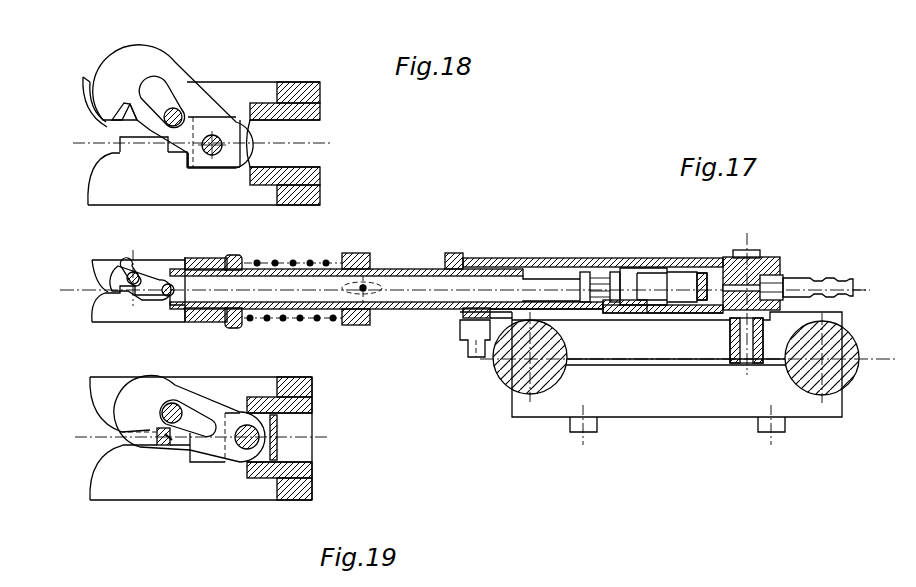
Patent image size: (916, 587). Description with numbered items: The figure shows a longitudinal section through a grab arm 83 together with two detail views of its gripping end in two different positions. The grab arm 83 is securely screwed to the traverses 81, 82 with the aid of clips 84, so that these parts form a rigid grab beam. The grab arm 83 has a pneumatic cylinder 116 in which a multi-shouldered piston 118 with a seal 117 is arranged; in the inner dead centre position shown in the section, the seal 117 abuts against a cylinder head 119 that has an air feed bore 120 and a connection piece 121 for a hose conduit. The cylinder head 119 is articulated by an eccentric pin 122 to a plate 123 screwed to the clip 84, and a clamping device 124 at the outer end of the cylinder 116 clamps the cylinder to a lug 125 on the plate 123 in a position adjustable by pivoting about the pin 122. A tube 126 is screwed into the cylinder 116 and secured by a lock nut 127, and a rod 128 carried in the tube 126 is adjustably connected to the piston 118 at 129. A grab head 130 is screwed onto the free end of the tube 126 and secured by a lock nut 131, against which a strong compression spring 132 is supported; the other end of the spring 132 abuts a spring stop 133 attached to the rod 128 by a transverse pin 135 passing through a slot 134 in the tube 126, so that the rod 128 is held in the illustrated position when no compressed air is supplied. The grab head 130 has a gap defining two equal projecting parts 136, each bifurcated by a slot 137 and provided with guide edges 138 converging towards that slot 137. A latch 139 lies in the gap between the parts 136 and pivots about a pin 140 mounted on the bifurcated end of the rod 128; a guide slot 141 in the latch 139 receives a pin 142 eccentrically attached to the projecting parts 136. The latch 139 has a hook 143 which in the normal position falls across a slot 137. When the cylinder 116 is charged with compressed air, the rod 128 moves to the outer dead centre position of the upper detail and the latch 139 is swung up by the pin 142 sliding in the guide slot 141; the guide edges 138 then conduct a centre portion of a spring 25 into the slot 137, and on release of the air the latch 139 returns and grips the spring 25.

In FIG. 19, the spring 25 is at (175, 441).
In FIG. 17, the traverse 81 is at (847, 348).
In FIG. 17, the traverse 82 is at (507, 376).
In FIG. 17, the grab arm 83 is at (453, 254).
In FIG. 17, the clip 84 is at (686, 408).
In FIG. 17, the pneumatic cylinder 116 is at (668, 262).
In FIG. 17, the seal 117 is at (713, 258).
In FIG. 17, the piston 118 is at (700, 314).
In FIG. 17, the cylinder head 119 is at (775, 272).
In FIG. 17, the air feed bore 120 is at (752, 275).
In FIG. 17, the hose nipple 121 is at (823, 282).
In FIG. 17, the eccentric pin 122 is at (744, 352).
In FIG. 17, the plate 123 is at (632, 348).
In FIG. 17, the clamping device 124 is at (462, 345).
In FIG. 17, the lug 125 is at (483, 357).
In FIG. 18, the tube 126 is at (322, 112).
In FIG. 17, the tube 126 is at (395, 267).
In FIG. 17, the lock nut 127 is at (427, 262).
In FIG. 18, the rod 128 is at (320, 140).
In FIG. 17, the rod 128 is at (535, 280).
In FIG. 17, the adjustable connection 129 is at (616, 275).
In FIG. 18, the grab head 130 is at (290, 83).
In FIG. 17, the grab head 130 is at (208, 250).
In FIG. 17, the lock nut 131 is at (258, 250).
In FIG. 17, the compression spring 132 is at (295, 262).
In FIG. 17, the spring stop 133 is at (355, 253).
In FIG. 17, the slot 134 is at (387, 312).
In FIG. 17, the transverse pin 135 is at (362, 309).
In FIG. 18, the projecting part 136 is at (133, 183).
In FIG. 17, the projecting part 136 is at (100, 314).
In FIG. 19, the projecting part 136 is at (168, 485).
In FIG. 18, the slot 137 is at (122, 140).
In FIG. 19, the slot 137 is at (120, 438).
In FIG. 18, the guide edge 138 is at (87, 87).
In FIG. 18, the latch 139 is at (137, 66).
In FIG. 17, the latch 139 is at (140, 283).
In FIG. 19, the latch 139 is at (155, 390).
In FIG. 18, the pin 140 is at (214, 135).
In FIG. 17, the pin 140 is at (168, 290).
In FIG. 18, the guide slot 141 is at (162, 88).
In FIG. 17, the guide slot 141 is at (130, 272).
In FIG. 18, the pin 142 is at (178, 112).
In FIG. 17, the pin 142 is at (133, 278).
In FIG. 18, the hook 143 is at (117, 112).
In FIG. 19, the hook 143 is at (160, 446).